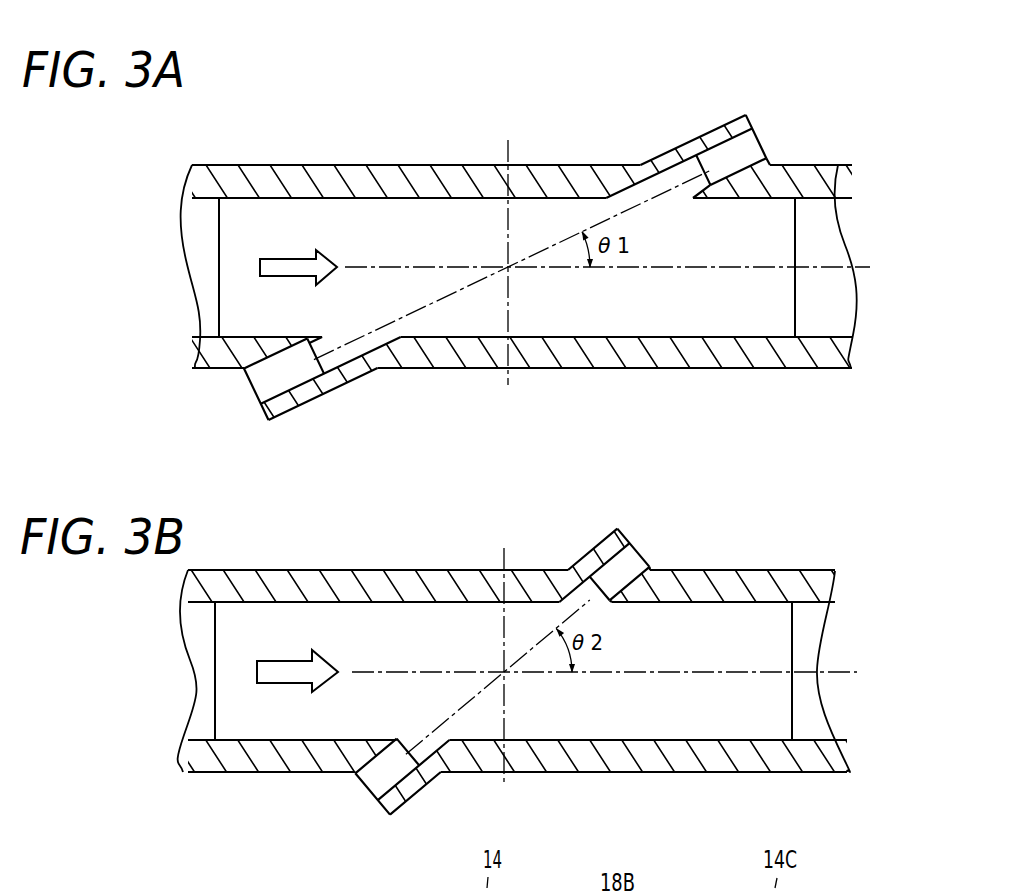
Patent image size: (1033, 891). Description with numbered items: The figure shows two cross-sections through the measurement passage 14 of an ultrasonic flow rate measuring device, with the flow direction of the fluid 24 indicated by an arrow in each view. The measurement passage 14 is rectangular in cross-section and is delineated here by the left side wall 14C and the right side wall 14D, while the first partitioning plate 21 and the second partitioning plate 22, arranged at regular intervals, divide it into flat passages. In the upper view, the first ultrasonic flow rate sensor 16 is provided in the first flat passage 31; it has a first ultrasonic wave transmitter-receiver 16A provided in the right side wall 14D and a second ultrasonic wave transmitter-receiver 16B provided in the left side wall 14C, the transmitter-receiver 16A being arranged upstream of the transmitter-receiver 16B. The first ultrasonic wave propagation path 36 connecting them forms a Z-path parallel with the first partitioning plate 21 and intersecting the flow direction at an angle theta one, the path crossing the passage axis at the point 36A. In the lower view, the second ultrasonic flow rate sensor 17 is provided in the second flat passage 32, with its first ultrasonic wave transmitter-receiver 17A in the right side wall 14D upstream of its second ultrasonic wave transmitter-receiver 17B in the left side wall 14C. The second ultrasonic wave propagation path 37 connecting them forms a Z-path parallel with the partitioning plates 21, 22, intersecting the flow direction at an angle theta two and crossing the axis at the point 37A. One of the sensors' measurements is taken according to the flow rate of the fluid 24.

In FIG. 3A, the measurement passage 14 is at (454, 162).
In FIG. 3B, the measurement passage 14 is at (443, 567).
In FIG. 3A, the left side wall 14C is at (822, 163).
In FIG. 3B, the left side wall 14C is at (762, 583).
In FIG. 3A, the right side wall 14D is at (770, 358).
In FIG. 3B, the right side wall 14D is at (760, 767).
In FIG. 3A, the first ultrasonic flow rate sensor 16 is at (241, 394).
In FIG. 3A, the first ultrasonic wave transmitter-receiver 16A is at (287, 382).
In FIG. 3A, the second ultrasonic wave transmitter-receiver 16B is at (727, 157).
In FIG. 3B, the second ultrasonic flow rate sensor 17 is at (361, 793).
In FIG. 3B, the first ultrasonic wave transmitter-receiver 17A is at (412, 798).
In FIG. 3B, the second ultrasonic wave transmitter-receiver 17B is at (613, 563).
In FIG. 3A, the first partitioning plate 21 is at (783, 243).
In FIG. 3B, the second partitioning plate 22 is at (773, 652).
In FIG. 3A, the fluid 24 is at (295, 258).
In FIG. 3B, the fluid 24 is at (282, 665).
In FIG. 3A, the first flat passage 31 is at (682, 306).
In FIG. 3B, the second flat passage 32 is at (634, 711).
In FIG. 3A, the first ultrasonic wave propagation path 36 is at (463, 284).
In FIG. 3A, the intersection point of first propagation path and pipe axis 36A is at (513, 275).
In FIG. 3B, the second ultrasonic wave propagation path 37 is at (456, 696).
In FIG. 3B, the intersection point of second propagation path and pipe axis 37A is at (510, 674).